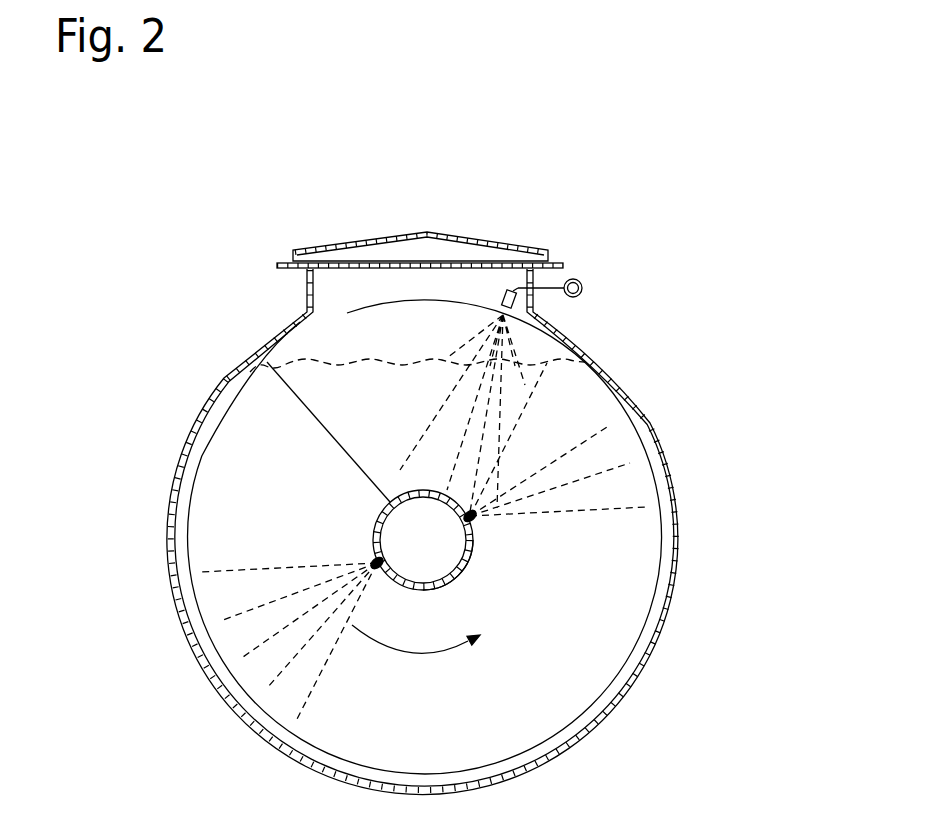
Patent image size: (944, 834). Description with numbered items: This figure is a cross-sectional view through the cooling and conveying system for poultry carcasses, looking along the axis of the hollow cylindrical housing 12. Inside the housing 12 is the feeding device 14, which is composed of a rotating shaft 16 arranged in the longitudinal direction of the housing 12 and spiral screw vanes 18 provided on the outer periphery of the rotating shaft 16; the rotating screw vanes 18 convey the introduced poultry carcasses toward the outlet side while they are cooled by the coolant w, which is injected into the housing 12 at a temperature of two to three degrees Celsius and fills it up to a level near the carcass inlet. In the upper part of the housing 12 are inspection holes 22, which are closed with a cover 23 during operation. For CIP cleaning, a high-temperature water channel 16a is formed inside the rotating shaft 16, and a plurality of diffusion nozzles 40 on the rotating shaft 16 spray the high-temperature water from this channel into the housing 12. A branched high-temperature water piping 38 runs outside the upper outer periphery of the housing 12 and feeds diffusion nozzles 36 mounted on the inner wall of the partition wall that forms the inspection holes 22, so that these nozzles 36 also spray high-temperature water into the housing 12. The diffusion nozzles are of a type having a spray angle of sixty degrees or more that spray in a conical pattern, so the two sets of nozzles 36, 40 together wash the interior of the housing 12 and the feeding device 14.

The housing 12 is at (650, 418).
The feeding device 14 is at (420, 408).
The rotating shaft 16 is at (407, 490).
The high-temperature water channel 16a is at (445, 567).
The screw vanes 18 is at (352, 460).
The inspection holes 22 is at (527, 272).
The cover 23 is at (443, 235).
The diffusion nozzles 36 is at (545, 318).
The high-temperature water piping 38 is at (582, 281).
The diffusion nozzles 40 is at (473, 518).
The coolant W is at (312, 362).